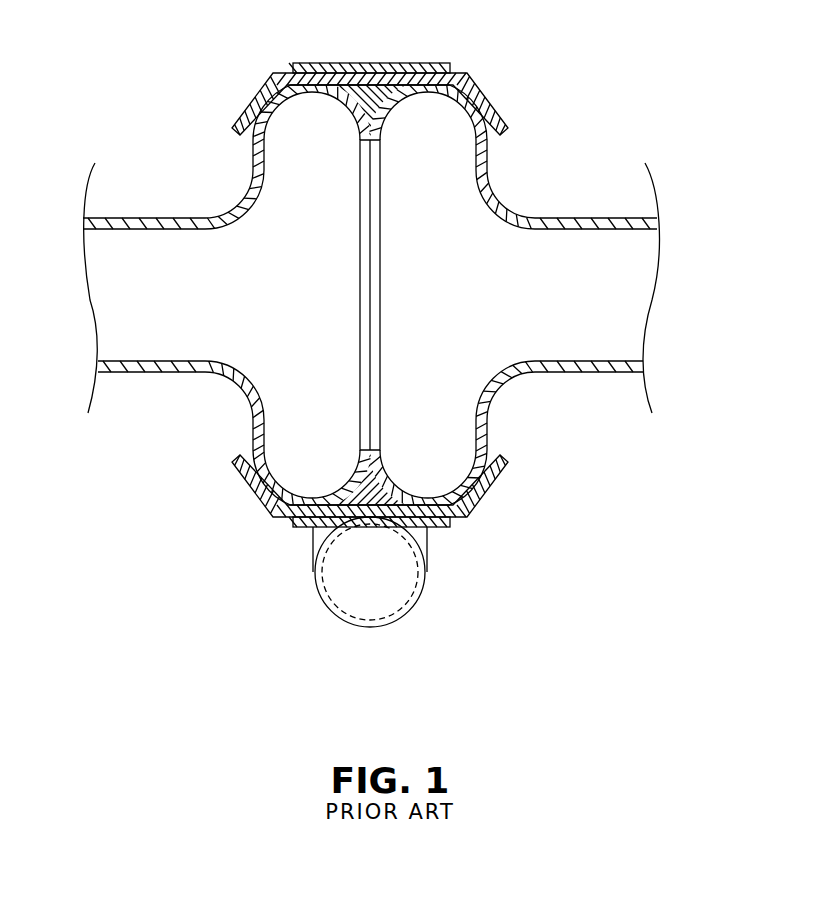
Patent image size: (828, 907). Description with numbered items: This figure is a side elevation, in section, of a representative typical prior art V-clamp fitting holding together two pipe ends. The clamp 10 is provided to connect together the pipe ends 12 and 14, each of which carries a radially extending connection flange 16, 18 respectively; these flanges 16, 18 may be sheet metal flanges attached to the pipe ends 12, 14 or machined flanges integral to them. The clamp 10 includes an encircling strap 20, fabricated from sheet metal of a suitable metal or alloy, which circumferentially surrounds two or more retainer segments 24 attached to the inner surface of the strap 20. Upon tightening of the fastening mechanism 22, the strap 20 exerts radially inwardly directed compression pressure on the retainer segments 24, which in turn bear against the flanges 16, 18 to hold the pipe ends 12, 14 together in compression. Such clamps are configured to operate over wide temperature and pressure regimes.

The clamp 10 is at (606, 554).
The pipe end 12 is at (168, 373).
The pipe end 14 is at (598, 373).
The connection flange 16 is at (337, 480).
The connection flange 18 is at (440, 482).
The encircling strap 20 is at (322, 63).
The fastening mechanism 22 is at (383, 588).
The retainer segments 24 is at (250, 105).